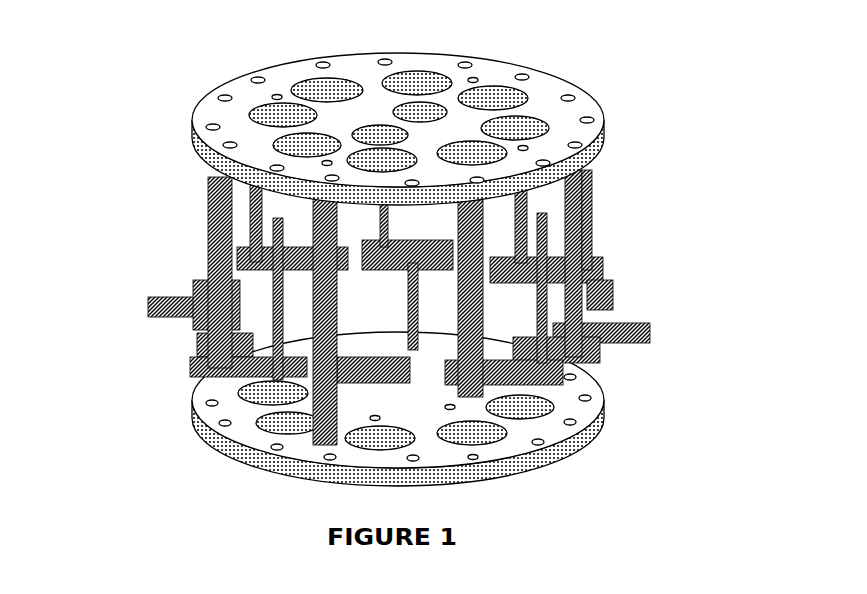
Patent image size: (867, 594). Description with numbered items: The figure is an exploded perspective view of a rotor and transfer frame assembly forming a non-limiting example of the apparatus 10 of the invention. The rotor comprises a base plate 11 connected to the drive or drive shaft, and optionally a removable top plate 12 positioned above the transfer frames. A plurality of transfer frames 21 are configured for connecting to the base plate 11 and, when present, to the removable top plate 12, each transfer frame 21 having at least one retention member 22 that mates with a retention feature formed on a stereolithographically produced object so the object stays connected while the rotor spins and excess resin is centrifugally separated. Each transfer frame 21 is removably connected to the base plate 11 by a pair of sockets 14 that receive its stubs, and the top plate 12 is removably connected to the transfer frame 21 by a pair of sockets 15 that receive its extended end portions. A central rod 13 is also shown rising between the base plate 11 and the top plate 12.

The methods and apparatus 10 is at (128, 47).
The base plate 11 is at (530, 463).
The removable top plate 12 is at (597, 145).
The central rod 13 is at (308, 438).
The sockets 14 is at (278, 448).
The sockets 15 is at (384, 61).
The transfer frame 21 is at (613, 316).
The retention member 22 is at (590, 220).